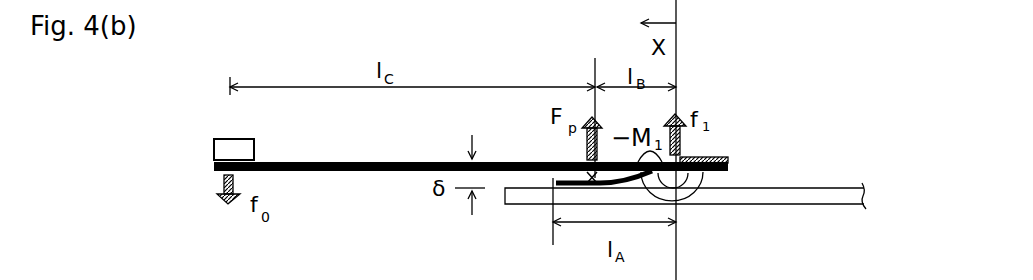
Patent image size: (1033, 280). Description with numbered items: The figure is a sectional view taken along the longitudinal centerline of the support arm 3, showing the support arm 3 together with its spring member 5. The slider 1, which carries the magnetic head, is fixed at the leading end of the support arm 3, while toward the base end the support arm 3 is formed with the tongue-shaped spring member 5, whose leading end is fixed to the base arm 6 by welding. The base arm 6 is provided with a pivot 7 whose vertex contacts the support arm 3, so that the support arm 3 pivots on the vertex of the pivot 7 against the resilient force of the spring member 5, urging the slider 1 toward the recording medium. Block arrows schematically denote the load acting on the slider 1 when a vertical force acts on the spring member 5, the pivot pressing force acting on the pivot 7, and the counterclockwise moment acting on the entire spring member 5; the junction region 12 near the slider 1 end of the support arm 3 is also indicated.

The slider 1 is at (240, 155).
The support arm 3 is at (520, 162).
The spring member 5 is at (562, 183).
The base arm 6 is at (750, 197).
The pivot 7 is at (578, 162).
The mounting portion 12 is at (722, 156).